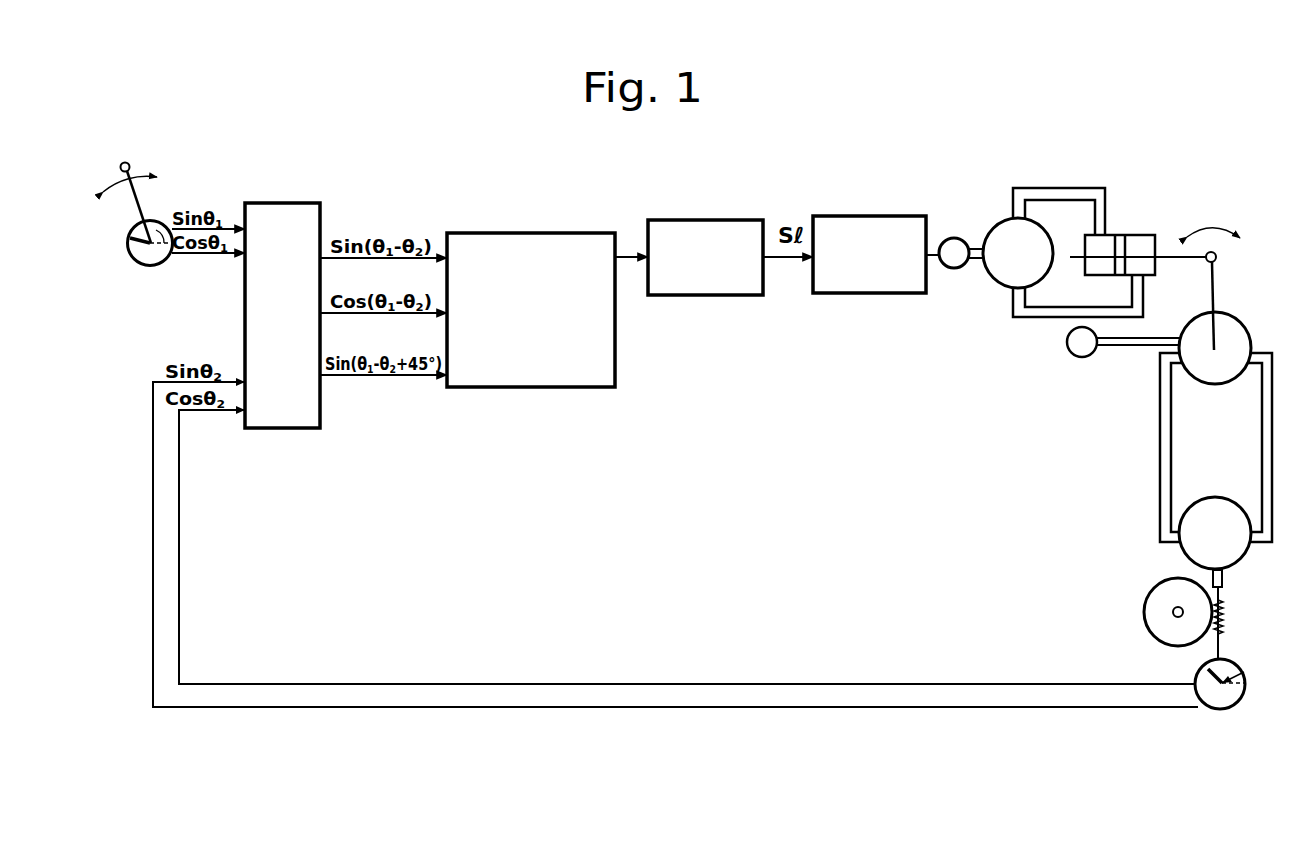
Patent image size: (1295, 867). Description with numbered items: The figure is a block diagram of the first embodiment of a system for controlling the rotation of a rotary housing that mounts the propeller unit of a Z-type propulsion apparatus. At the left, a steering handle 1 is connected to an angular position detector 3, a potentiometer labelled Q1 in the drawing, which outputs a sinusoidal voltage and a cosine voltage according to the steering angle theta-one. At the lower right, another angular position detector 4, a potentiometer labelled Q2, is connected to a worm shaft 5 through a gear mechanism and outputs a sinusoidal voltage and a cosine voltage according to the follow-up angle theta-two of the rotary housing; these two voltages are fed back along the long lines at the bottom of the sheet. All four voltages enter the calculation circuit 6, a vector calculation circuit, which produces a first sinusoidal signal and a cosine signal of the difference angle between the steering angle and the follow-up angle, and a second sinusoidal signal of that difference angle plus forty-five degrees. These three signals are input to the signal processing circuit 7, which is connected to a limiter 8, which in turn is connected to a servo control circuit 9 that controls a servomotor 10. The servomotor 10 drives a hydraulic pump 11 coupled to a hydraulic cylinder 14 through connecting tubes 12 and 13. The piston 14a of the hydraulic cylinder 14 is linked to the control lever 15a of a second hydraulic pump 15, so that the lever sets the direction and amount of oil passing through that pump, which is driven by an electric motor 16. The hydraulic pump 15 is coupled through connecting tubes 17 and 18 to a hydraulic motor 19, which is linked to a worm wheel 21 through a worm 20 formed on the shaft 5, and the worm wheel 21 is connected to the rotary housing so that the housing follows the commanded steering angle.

The steering handle 1 is at (140, 201).
The angular position detector 3 is at (162, 267).
The angular position detector 4 is at (1238, 701).
The worm shaft 5 is at (1221, 645).
The calculation circuit 6 is at (303, 428).
The signal processing circuit 7 is at (616, 330).
The limiter 8 is at (727, 296).
The servo control circuit 9 is at (885, 294).
The servomotor 10 is at (951, 268).
The hydraulic pump 11 is at (1003, 286).
The connecting tube 12 is at (1059, 188).
The connecting tube 13 is at (1021, 318).
The hydraulic cylinder 14 is at (1134, 234).
The piston 14a is at (1169, 259).
The hydraulic pump 15 is at (1243, 323).
The control lever 15a is at (1217, 285).
The electric motor 16 is at (1087, 357).
The connecting tube 17 is at (1159, 457).
The connecting tube 18 is at (1275, 441).
The hydraulic motor 19 is at (1245, 556).
The worm 20 is at (1223, 614).
The worm wheel 21 is at (1143, 618).
The first resolver output Q1 is at (167, 222).
The second resolver output Q2 is at (1243, 677).